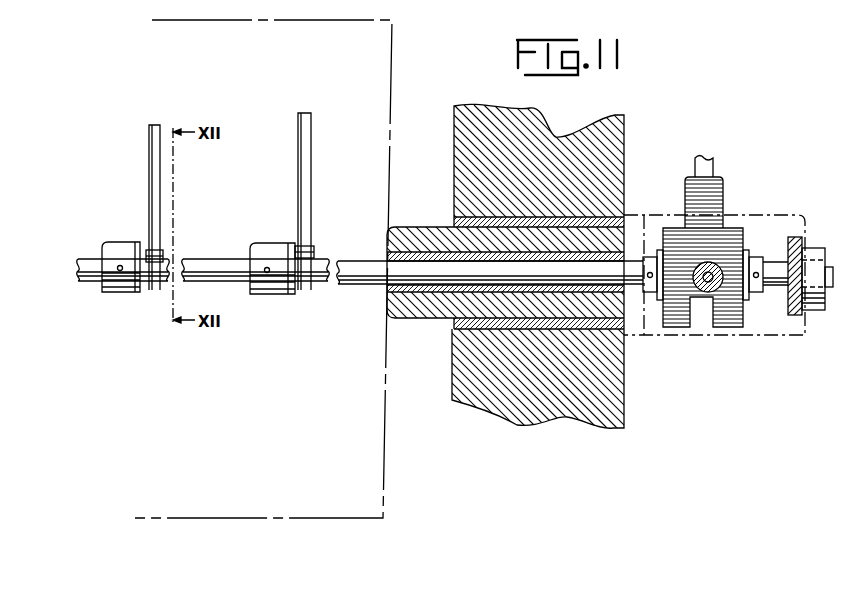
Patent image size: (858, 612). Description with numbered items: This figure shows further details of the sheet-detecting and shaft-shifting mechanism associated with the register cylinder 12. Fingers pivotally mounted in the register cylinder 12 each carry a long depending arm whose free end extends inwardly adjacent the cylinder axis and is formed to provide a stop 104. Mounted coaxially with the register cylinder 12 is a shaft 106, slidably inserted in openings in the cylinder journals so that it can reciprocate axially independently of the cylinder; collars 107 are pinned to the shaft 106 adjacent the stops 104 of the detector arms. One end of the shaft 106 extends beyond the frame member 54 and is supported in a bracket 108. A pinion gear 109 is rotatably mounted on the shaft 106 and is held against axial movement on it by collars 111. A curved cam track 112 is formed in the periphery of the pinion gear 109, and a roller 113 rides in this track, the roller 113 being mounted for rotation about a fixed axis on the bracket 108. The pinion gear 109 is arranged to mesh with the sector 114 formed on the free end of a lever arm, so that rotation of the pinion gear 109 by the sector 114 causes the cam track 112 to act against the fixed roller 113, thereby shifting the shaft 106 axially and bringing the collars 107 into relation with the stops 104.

The register cylinder 12 is at (386, 425).
The frame member 54 is at (552, 408).
The stop 104 is at (307, 252).
The shaft 106 is at (88, 283).
The collar 107 is at (126, 288).
The bracket 108 is at (796, 316).
The pinion gear 109 is at (734, 237).
The collar 111 is at (651, 297).
The cam track 112 is at (717, 289).
The roller 113 is at (703, 291).
The sector 114 is at (722, 195).